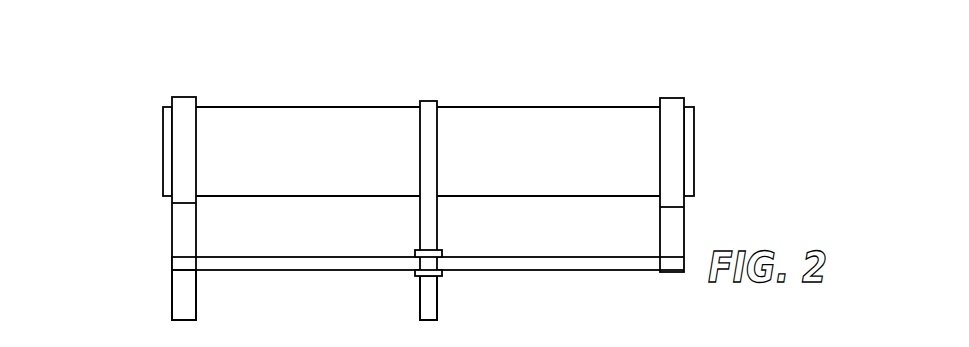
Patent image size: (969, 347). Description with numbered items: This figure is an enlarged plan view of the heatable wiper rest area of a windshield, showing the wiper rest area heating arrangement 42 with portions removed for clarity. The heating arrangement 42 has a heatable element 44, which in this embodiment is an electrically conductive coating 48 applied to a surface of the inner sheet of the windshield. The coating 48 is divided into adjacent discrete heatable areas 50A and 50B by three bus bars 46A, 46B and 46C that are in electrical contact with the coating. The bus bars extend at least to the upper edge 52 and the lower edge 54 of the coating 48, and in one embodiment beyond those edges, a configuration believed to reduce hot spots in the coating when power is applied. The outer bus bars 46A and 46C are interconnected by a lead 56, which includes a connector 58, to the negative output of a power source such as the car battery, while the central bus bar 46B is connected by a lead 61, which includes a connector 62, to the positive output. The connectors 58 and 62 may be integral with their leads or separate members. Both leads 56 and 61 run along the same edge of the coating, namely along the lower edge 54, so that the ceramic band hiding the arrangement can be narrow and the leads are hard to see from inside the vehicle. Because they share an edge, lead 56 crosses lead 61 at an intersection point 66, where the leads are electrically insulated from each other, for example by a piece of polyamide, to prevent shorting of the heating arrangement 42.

The wiper rest area heating arrangement 42 is at (143, 194).
The heatable element 44 is at (502, 107).
The bus bar 46A is at (183, 97).
The bus bar 46B is at (428, 100).
The bus bar 46C is at (672, 98).
The electrically conductive coating 48 is at (618, 124).
The heatable coating area 50A is at (328, 163).
The heatable coating area 50B is at (571, 163).
The edge of coating 52 is at (287, 107).
The lower edge of coating 54 is at (532, 196).
The lead 56 is at (278, 255).
The connector 58 is at (172, 300).
The lead 61 is at (420, 222).
The connector 62 is at (437, 303).
The intersection point 66 is at (414, 280).